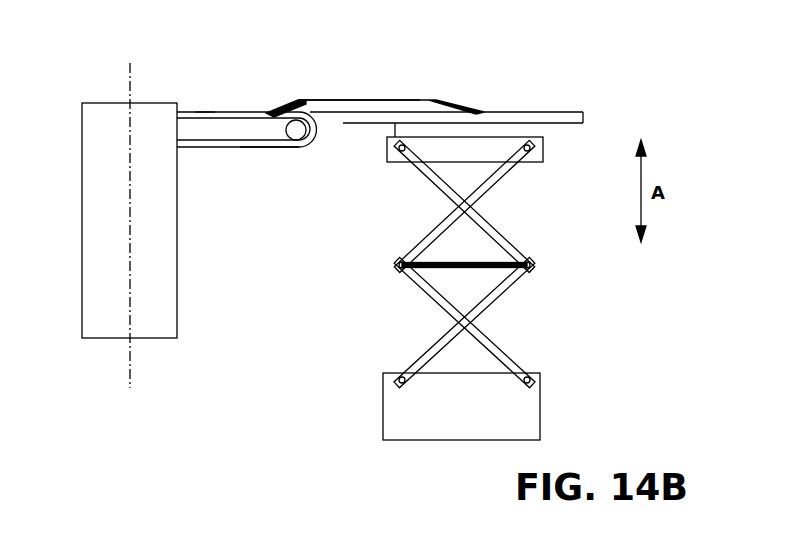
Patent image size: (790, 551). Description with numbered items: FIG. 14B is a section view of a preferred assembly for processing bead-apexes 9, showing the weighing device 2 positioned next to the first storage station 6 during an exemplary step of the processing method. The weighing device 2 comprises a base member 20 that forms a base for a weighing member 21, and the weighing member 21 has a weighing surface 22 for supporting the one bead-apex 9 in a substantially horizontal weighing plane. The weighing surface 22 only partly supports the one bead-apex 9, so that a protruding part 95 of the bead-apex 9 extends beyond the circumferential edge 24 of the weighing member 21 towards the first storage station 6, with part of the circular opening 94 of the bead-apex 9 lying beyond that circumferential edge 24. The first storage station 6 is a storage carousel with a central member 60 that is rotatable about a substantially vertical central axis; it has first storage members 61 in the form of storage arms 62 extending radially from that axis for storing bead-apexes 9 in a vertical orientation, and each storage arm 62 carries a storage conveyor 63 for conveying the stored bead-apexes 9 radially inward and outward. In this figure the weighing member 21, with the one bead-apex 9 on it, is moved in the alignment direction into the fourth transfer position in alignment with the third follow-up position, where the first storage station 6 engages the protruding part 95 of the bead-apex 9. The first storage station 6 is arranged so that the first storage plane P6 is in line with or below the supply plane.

The weighing device 2 is at (369, 467).
The first storage station 6 is at (188, 370).
The bead-apex 9 is at (370, 69).
The base member 20 is at (522, 420).
The weighing member 21 is at (585, 123).
The weighing surface 22 is at (583, 112).
The circumferential edge 24 is at (328, 126).
The central member 60 is at (97, 327).
The first storage member 61 is at (232, 110).
The storage arm 62 is at (205, 148).
The storage conveyor 63 is at (275, 148).
The circular opening 94 is at (318, 100).
The protruding part 95 is at (290, 100).
The first storage plane P6 is at (205, 110).